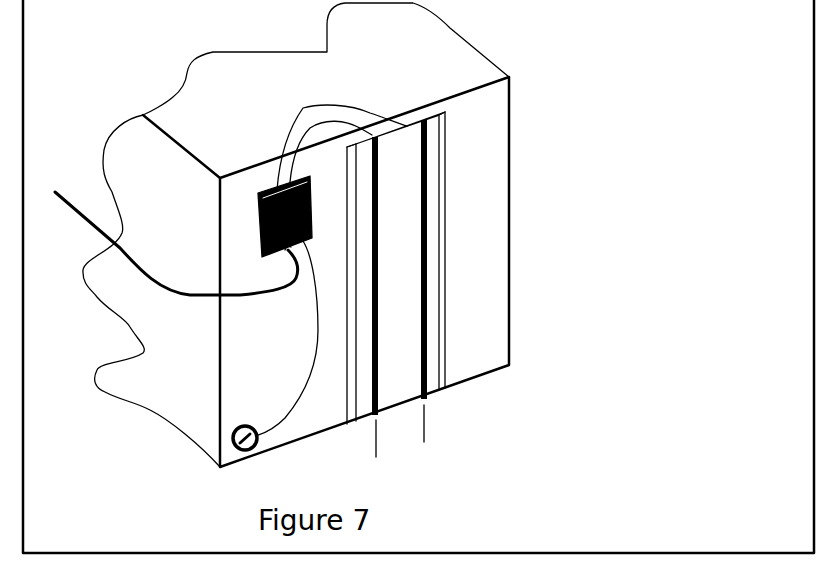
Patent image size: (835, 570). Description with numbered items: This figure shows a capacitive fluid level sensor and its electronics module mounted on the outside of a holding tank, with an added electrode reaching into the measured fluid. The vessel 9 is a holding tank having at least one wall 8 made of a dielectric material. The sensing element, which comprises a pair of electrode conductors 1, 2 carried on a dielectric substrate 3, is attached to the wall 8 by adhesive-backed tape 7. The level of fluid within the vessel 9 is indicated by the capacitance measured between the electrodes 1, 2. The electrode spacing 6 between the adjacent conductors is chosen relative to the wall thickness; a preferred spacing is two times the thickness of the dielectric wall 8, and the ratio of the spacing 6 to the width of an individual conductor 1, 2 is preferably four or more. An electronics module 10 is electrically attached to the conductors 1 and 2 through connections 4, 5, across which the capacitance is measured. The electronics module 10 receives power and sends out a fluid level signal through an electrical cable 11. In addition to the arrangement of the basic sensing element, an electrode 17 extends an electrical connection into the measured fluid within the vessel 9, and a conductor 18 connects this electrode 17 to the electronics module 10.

The conductor 1 is at (379, 188).
The conductor 2 is at (428, 197).
The dielectric substrate 3 is at (444, 273).
The connection 4 is at (305, 128).
The connection 5 is at (302, 107).
The electrode spacing 6 is at (337, 458).
The adhesive-backed tape 7 is at (346, 400).
The wall 8 is at (483, 117).
The vessel 9 is at (444, 53).
The electronics module 10 is at (251, 214).
The electrical cable 11 is at (93, 233).
The electrode 17 is at (249, 425).
The conductor 18 is at (316, 344).